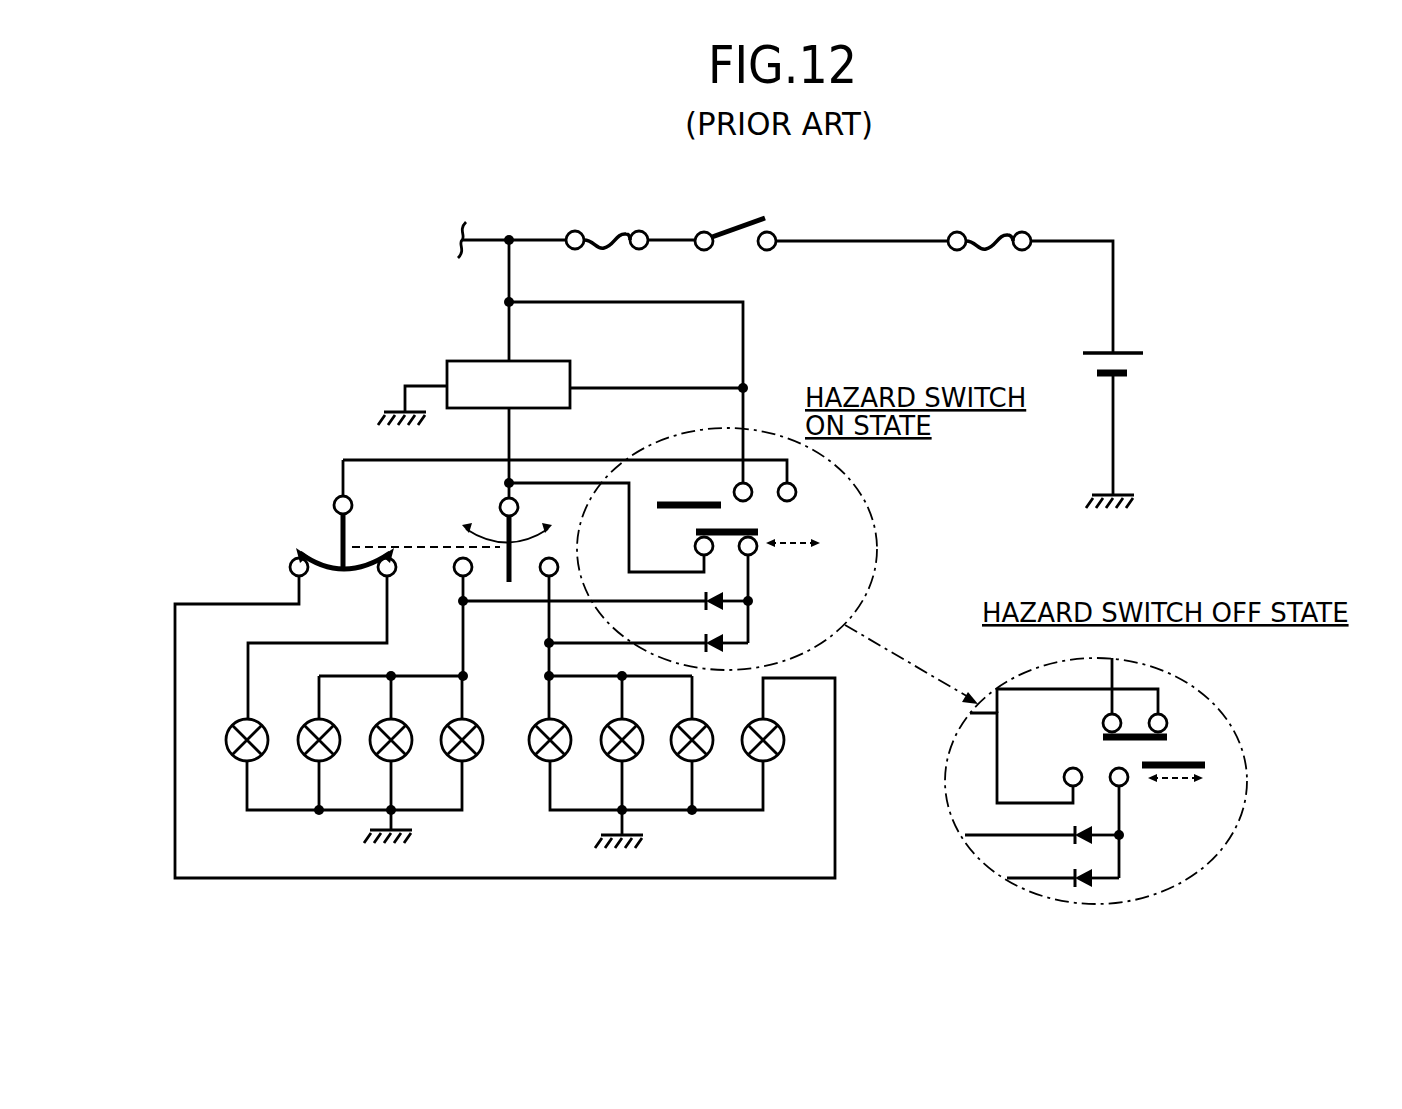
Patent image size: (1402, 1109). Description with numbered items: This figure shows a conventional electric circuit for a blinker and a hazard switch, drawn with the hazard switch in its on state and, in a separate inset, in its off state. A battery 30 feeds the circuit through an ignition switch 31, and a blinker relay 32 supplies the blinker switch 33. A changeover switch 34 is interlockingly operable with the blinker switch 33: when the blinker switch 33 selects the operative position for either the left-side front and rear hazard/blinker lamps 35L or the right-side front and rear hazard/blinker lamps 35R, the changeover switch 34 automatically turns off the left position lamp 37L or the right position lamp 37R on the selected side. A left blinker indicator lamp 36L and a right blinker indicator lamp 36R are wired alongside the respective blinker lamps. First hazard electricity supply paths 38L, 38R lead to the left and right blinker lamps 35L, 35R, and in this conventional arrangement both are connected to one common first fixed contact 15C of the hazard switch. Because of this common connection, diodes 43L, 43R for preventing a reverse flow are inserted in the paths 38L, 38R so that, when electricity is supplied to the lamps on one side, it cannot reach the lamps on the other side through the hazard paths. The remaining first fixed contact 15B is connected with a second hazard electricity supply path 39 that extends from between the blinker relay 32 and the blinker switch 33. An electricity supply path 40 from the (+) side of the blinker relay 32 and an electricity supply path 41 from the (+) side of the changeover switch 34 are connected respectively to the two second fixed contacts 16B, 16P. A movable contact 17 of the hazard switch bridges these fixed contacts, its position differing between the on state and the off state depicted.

The battery 30 is at (1135, 352).
The ignition switch 31 is at (742, 221).
The blinker relay 32 is at (470, 362).
The blinker switch 33 is at (500, 530).
The changeover switch 34 is at (323, 562).
The left-side front and rear hazard/blinker lamps 35L is at (395, 750).
The right-side front and rear hazard/blinker lamps 35R is at (620, 750).
The left blinker indicator lamp 36L is at (302, 742).
The right blinker indicator lamp 36R is at (708, 748).
The left position lamp 37L is at (232, 742).
The right position lamp 37R is at (770, 748).
The first hazard electricity supply path 38L is at (592, 598).
The first hazard electricity supply path 38R is at (595, 645).
The second hazard electricity supply path 39 is at (585, 482).
The electricity supply path 40 is at (745, 324).
The electricity supply path 41 is at (765, 458).
The diode 43L is at (706, 607).
The diode 43R is at (722, 650).
The first fixed contact 15B is at (698, 553).
The common first fixed contact 15C is at (757, 552).
The second fixed contact 16B is at (752, 500).
The second fixed contact 16P is at (797, 492).
The movable contact 17 is at (735, 530).